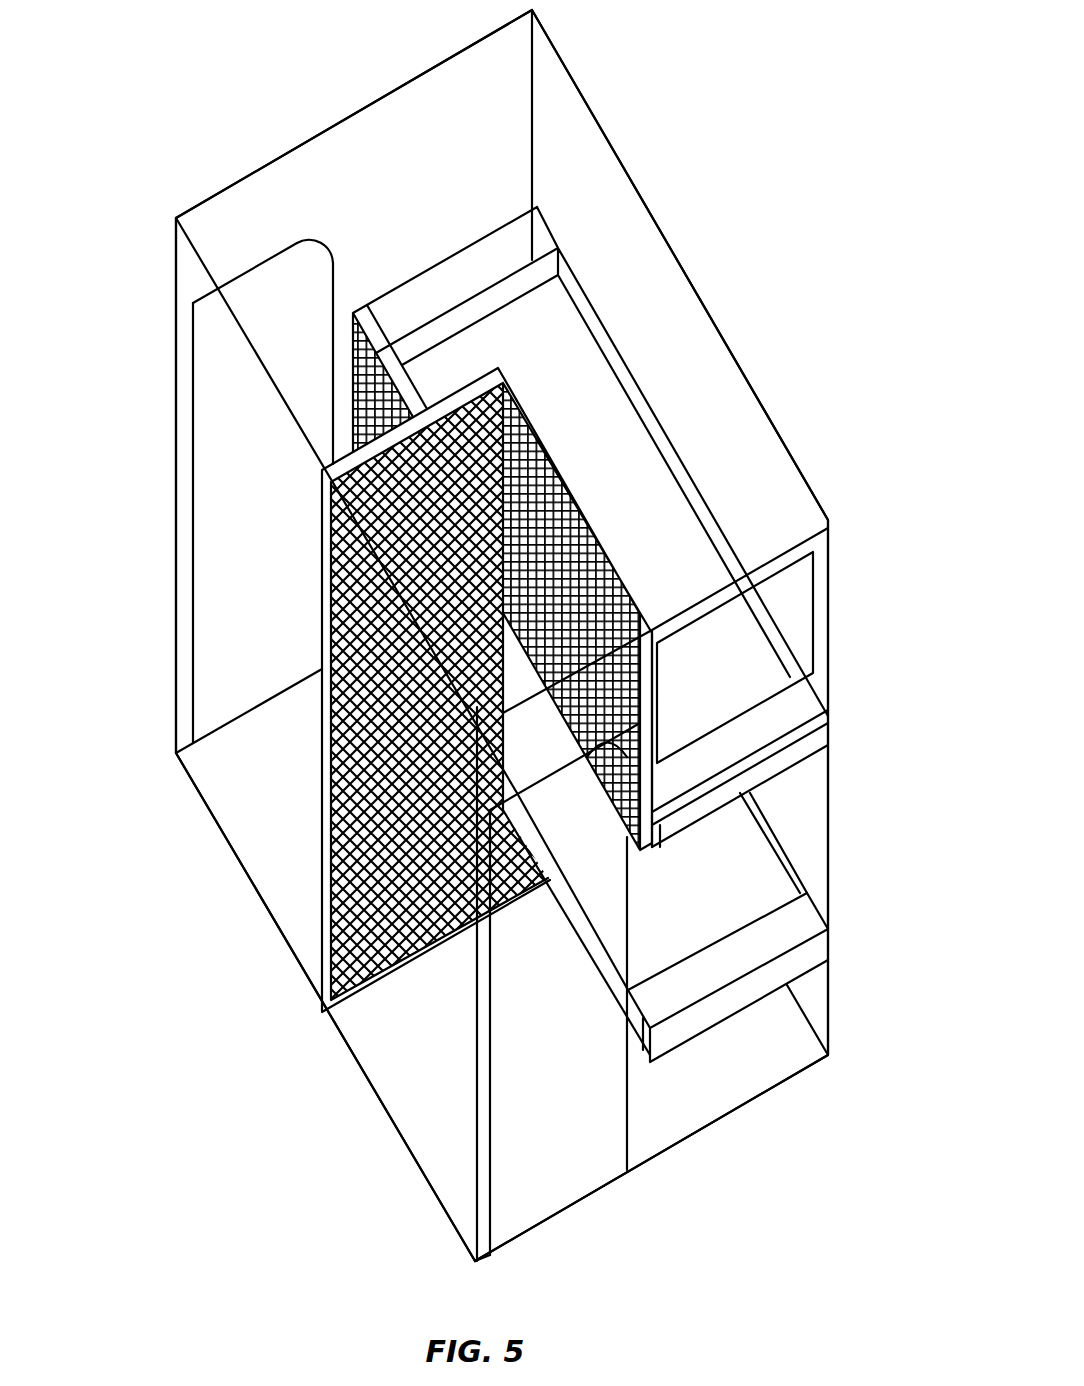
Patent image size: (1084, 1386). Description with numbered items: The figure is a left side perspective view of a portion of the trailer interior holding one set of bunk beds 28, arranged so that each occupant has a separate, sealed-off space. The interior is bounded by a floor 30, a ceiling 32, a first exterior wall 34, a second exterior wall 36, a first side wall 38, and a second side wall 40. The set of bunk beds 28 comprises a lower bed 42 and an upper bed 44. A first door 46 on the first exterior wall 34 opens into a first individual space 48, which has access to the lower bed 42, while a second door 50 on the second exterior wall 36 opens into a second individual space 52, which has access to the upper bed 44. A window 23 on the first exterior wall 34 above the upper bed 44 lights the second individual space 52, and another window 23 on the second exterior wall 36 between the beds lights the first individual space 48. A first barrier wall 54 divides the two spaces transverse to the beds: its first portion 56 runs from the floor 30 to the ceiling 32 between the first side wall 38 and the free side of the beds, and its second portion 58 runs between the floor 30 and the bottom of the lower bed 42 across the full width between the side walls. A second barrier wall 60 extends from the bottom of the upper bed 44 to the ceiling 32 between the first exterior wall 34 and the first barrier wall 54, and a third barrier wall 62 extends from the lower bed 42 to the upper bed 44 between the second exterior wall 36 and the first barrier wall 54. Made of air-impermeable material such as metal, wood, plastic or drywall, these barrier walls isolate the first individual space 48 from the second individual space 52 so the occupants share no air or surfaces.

The window 23 is at (798, 588).
The set of bunk beds 28 is at (848, 711).
The floor 30 is at (268, 866).
The ceiling 32 is at (562, 163).
The first exterior wall 34 is at (705, 1093).
The second exterior wall 36 is at (290, 97).
The first side wall 38 is at (150, 593).
The second side wall 40 is at (775, 390).
The lower bed 42 is at (706, 911).
The upper bed 44 is at (729, 693).
The first door 46 is at (540, 1155).
The first individual space 48 is at (416, 1077).
The second door 50 is at (281, 496).
The second individual space 52 is at (222, 632).
The first barrier wall 54 is at (500, 931).
The first portion 56 is at (358, 724).
The second portion 58 is at (525, 902).
The second barrier wall 60 is at (557, 522).
The third barrier wall 62 is at (352, 418).